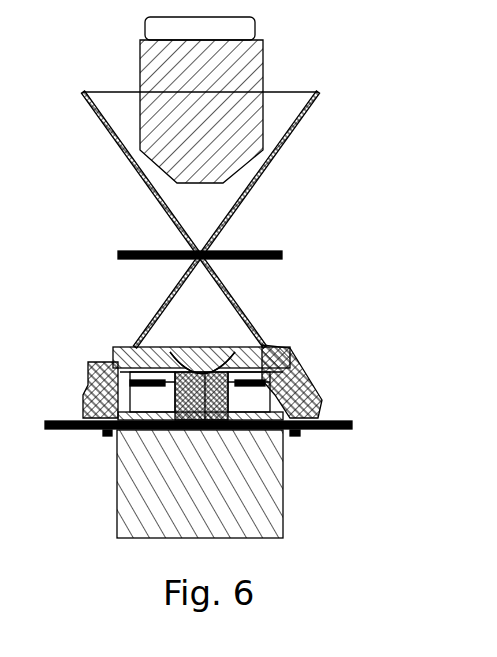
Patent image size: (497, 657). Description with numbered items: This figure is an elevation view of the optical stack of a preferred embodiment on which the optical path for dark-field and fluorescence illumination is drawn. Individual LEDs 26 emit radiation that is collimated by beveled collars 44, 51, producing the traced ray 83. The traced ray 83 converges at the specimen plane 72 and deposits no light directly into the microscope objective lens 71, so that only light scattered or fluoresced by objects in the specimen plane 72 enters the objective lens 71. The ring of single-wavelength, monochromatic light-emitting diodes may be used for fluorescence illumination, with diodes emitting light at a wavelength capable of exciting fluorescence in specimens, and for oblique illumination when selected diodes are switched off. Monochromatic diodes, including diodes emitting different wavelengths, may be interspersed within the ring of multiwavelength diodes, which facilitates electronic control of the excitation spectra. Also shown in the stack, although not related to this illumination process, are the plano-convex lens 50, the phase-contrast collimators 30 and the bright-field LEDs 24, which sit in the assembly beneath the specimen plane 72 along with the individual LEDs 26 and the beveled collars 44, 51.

The microscope objective lens 71 is at (245, 72).
The specimen plane 72 is at (253, 252).
The traced ray 83 is at (243, 308).
The phase-contrast collimators 30 is at (162, 343).
The plano-convex lens 50 is at (190, 343).
The beveled collar 51 is at (265, 350).
The beveled collar 44 is at (293, 358).
The individual LEDs 26 is at (313, 375).
The bright-field LEDs 24 is at (138, 352).